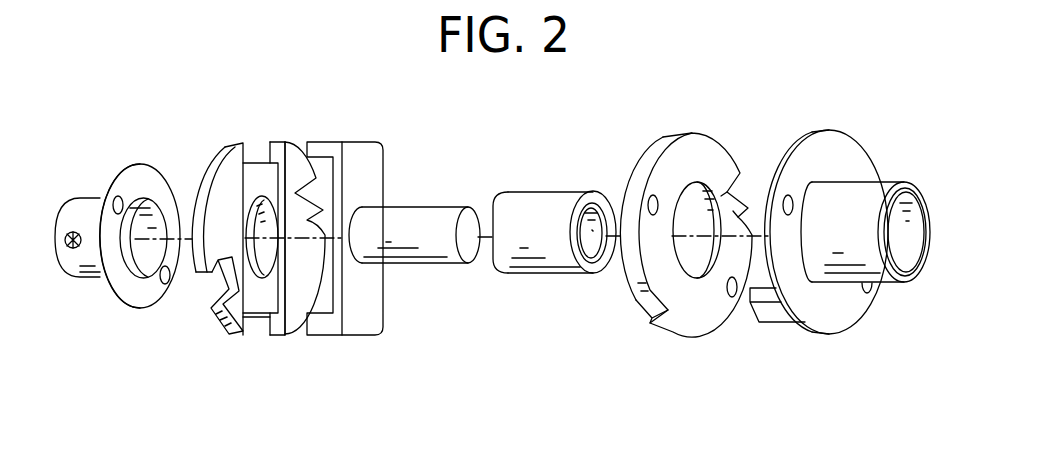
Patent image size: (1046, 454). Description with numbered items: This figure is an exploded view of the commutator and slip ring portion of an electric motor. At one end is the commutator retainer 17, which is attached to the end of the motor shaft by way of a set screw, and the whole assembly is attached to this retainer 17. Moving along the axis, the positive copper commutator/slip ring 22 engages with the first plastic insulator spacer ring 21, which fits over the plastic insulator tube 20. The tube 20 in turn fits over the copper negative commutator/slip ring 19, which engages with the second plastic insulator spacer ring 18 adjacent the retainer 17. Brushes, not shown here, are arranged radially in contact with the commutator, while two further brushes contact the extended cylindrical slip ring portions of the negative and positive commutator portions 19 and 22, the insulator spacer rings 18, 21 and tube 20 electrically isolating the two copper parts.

The commutator retainer 17 is at (145, 307).
The second plastic insulator spacer ring 18 is at (280, 337).
The copper negative commutator/slip ring 19 is at (397, 264).
The plastic insulator tube 20 is at (537, 277).
The first plastic insulator spacer ring 21 is at (687, 335).
The positive copper commutator/slip ring 22 is at (810, 333).